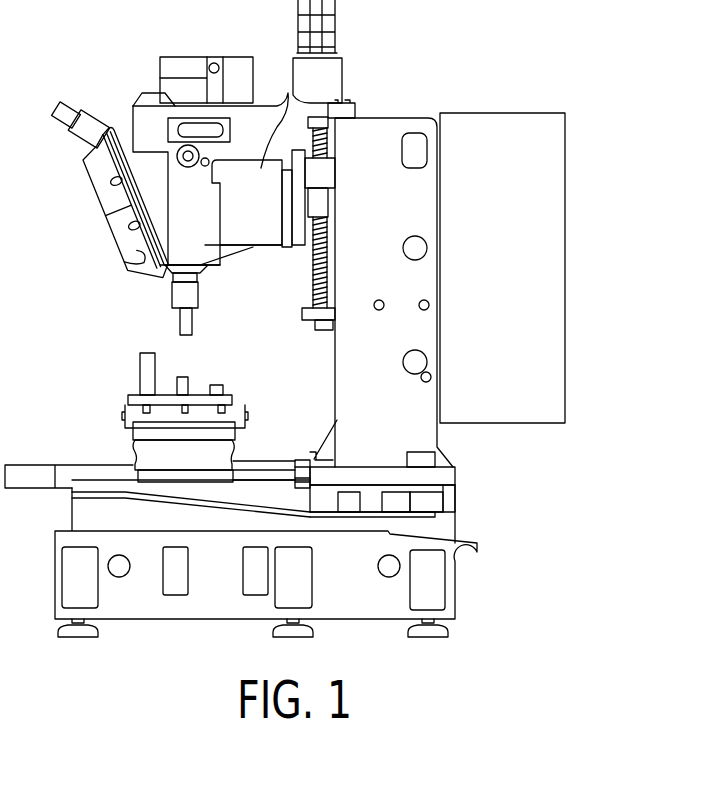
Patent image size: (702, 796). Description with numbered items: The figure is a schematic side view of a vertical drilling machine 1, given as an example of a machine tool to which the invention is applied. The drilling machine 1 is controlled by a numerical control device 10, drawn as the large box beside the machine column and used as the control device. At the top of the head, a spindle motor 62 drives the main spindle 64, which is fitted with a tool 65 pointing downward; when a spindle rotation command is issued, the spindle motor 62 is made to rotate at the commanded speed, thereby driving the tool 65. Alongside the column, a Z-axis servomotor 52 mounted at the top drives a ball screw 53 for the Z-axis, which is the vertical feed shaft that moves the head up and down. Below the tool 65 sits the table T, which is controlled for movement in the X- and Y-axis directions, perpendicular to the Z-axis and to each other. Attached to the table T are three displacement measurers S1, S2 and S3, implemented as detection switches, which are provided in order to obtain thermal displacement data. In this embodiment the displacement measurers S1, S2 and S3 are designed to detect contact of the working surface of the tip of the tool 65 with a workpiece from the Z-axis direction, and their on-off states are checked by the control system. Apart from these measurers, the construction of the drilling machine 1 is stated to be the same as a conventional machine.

The vertical drilling machine 1 is at (573, 73).
The numerical control device 10 is at (565, 199).
The Z-axis servomotor 52 is at (330, 25).
The ball screw 53 is at (325, 153).
The spindle motor 62 is at (185, 62).
The main spindle 64 is at (218, 252).
The tool 65 is at (190, 323).
The displacement measurer S1 is at (147, 352).
The displacement measurer S2 is at (182, 372).
The displacement measurer S3 is at (217, 384).
The table T is at (130, 422).